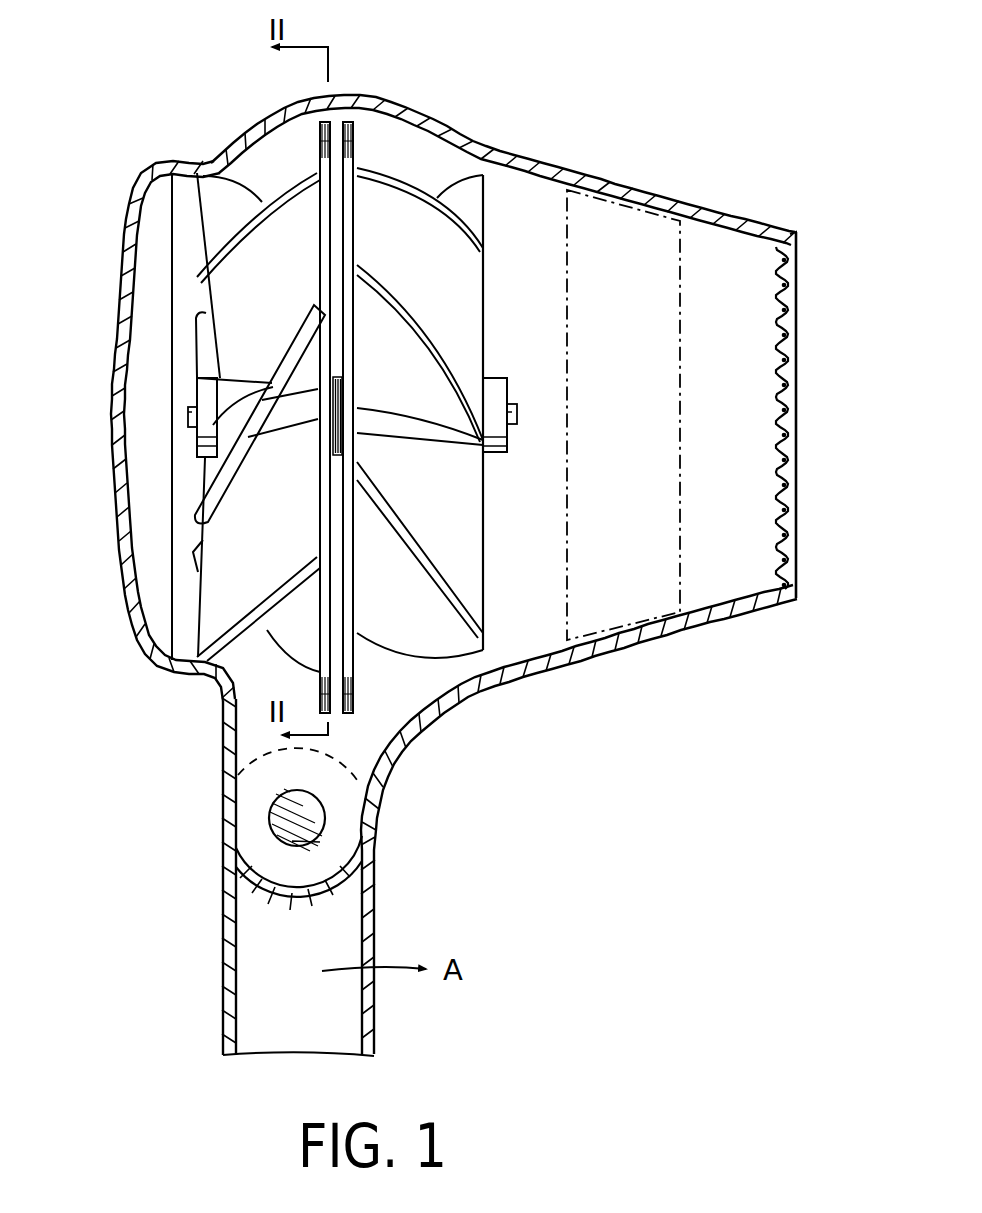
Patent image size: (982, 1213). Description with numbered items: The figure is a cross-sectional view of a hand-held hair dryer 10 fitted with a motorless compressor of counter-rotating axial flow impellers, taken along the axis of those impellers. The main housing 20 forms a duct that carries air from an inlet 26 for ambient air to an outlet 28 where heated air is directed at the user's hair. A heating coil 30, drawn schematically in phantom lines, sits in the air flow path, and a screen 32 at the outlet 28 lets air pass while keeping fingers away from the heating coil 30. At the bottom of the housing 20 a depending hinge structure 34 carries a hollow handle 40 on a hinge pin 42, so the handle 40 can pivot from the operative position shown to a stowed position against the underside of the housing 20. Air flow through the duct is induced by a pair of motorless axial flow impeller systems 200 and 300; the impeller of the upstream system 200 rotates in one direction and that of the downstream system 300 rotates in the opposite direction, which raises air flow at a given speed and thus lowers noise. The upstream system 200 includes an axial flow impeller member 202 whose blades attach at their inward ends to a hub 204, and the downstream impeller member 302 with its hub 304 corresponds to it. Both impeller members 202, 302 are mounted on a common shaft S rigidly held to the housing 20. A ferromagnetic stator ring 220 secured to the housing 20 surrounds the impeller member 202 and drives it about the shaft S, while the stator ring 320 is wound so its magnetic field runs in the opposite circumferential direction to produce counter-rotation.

The hair dryer 10 is at (540, 146).
The main housing 20 is at (465, 690).
The inlet 26 is at (124, 592).
The outlet 28 is at (788, 251).
The heating coil 30 is at (655, 607).
The screen 32 is at (788, 565).
The hinge structure 34 is at (300, 890).
The handle 40 is at (337, 1017).
The hinge pin 42 is at (305, 823).
The upstream impeller system 200 is at (172, 362).
The impeller member 202 is at (230, 291).
The hub 204 is at (207, 395).
The stator ring 220 is at (320, 686).
The downstream impeller system 300 is at (465, 351).
The impeller member 302 is at (478, 279).
The hub 304 is at (490, 453).
The stator ring 320 is at (353, 686).
The shaft S is at (188, 417).